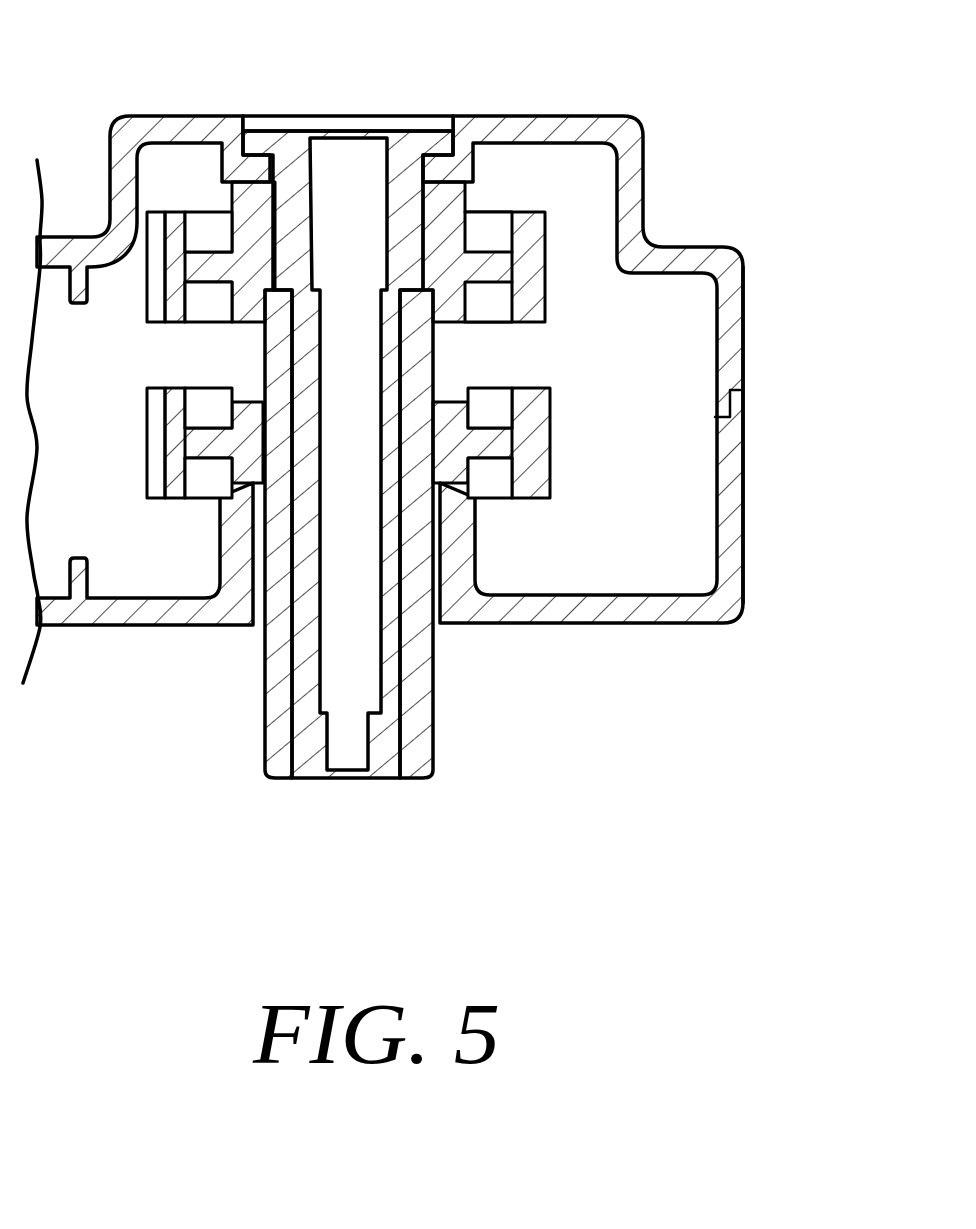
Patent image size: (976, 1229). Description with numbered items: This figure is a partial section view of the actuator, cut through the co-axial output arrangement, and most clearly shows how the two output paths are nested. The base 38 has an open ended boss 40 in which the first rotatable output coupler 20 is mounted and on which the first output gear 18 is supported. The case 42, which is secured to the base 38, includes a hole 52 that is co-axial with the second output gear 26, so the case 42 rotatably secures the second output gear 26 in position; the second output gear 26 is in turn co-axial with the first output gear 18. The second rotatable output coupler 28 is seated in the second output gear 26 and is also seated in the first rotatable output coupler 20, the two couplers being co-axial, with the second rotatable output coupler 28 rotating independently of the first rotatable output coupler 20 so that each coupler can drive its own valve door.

The first output gear 18 is at (540, 497).
The first rotatable output coupler 20 is at (273, 713).
The second output gear 26 is at (529, 211).
The second rotatable output coupler 28 is at (305, 157).
The base 38 is at (743, 540).
The open ended boss 40 is at (477, 560).
The case 42 is at (743, 368).
The hole 52 is at (404, 116).